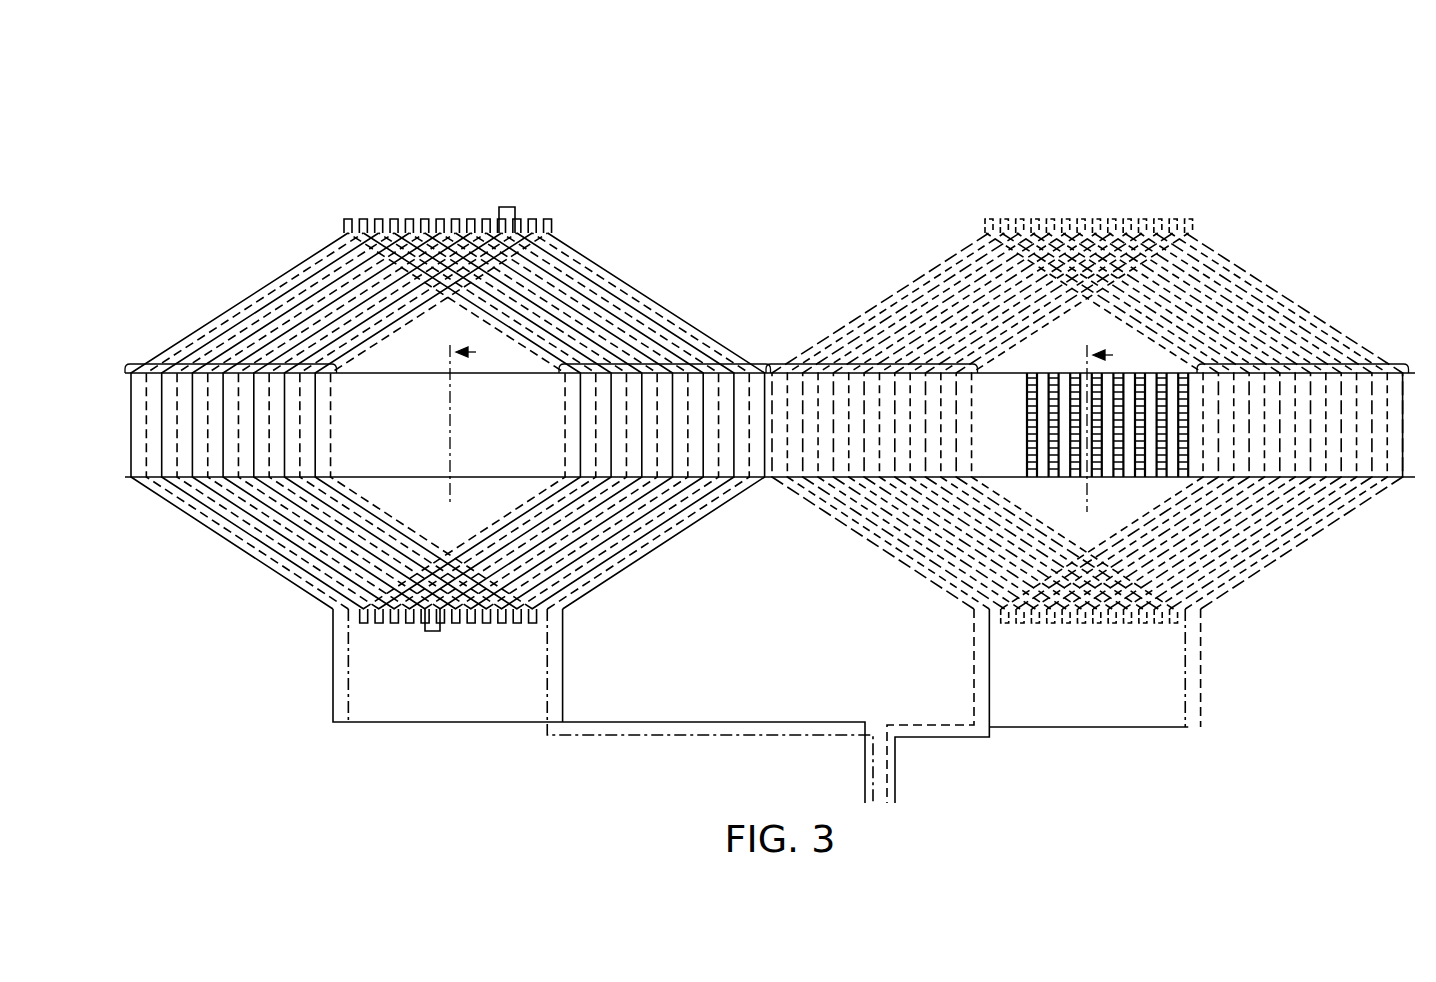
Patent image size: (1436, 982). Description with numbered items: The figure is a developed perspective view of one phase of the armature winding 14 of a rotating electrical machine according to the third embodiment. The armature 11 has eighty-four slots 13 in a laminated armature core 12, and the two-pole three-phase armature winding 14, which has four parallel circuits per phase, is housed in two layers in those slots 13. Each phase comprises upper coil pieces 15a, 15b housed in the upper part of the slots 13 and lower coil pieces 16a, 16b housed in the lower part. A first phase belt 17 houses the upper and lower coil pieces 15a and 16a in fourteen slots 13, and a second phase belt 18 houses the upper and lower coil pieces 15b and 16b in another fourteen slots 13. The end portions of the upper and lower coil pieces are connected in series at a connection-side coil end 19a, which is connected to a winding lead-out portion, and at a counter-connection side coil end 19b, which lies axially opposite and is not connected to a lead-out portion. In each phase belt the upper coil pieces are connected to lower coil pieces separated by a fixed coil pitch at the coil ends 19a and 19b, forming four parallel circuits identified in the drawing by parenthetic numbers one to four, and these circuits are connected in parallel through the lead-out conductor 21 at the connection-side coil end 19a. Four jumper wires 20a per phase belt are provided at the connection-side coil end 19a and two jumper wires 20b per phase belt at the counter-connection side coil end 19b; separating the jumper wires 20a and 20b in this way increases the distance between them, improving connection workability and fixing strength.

The armature 11 is at (762, 241).
The armature core 12 is at (1158, 440).
The slots 13 is at (1107, 472).
The armature winding 14 is at (705, 537).
The upper coil pieces of first phase belt 15a is at (239, 367).
The upper coil pieces of second phase belt 15b is at (880, 367).
The lower coil pieces of first phase belt 16a is at (655, 367).
The lower coil pieces of second phase belt 16b is at (1308, 365).
The first phase belt 17 is at (147, 102).
The second phase belt 18 is at (1385, 102).
The connection-side coil end 19a is at (307, 699).
The counter-connection side coil end 19b is at (1328, 185).
The jumper wires at connection-side coil end 20a is at (433, 632).
The jumper wires at counter-connection side coil end 20b is at (511, 207).
The lead-out conductor 21 is at (935, 725).